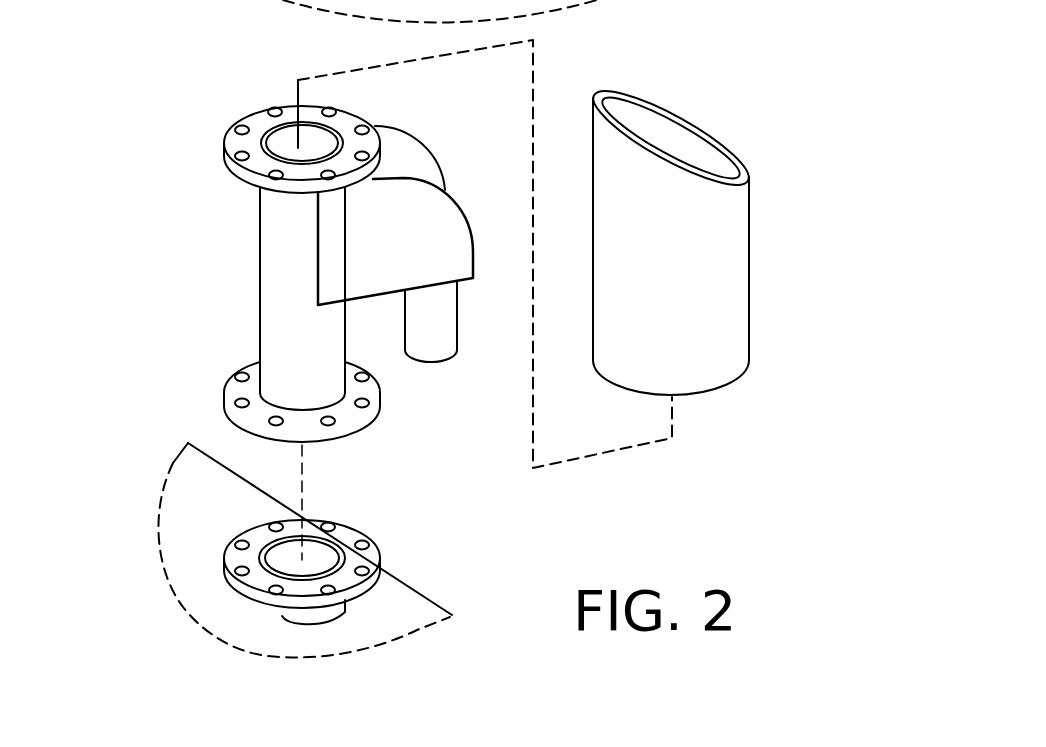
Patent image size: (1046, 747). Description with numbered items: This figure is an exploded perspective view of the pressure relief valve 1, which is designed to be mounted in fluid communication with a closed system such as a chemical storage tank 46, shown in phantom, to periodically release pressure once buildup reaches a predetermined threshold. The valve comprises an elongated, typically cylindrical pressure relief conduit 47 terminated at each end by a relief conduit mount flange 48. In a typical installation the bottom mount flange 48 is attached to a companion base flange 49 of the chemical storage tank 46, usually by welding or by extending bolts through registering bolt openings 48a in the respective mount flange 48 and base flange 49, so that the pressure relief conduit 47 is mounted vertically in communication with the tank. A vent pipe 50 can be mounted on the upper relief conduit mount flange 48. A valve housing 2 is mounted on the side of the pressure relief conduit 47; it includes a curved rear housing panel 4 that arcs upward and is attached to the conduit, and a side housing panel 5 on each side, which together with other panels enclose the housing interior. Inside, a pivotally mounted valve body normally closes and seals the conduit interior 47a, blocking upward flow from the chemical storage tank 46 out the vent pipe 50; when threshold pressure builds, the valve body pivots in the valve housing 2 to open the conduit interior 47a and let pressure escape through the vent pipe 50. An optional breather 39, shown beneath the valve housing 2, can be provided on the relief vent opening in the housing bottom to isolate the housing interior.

The pressure relief valve 1 is at (207, 110).
The valve housing 2 is at (448, 183).
The rear housing panel 4 is at (393, 160).
The side housing panel 5 is at (402, 248).
The breather 39 is at (440, 375).
The chemical storage tank 46 is at (168, 459).
The pressure relief conduit 47 is at (248, 250).
The conduit interior 47a is at (289, 142).
The relief conduit mount flange 48 is at (225, 153).
The bolt openings 48a is at (270, 177).
The base flange 49 is at (253, 530).
The vent pipe 50 is at (750, 236).